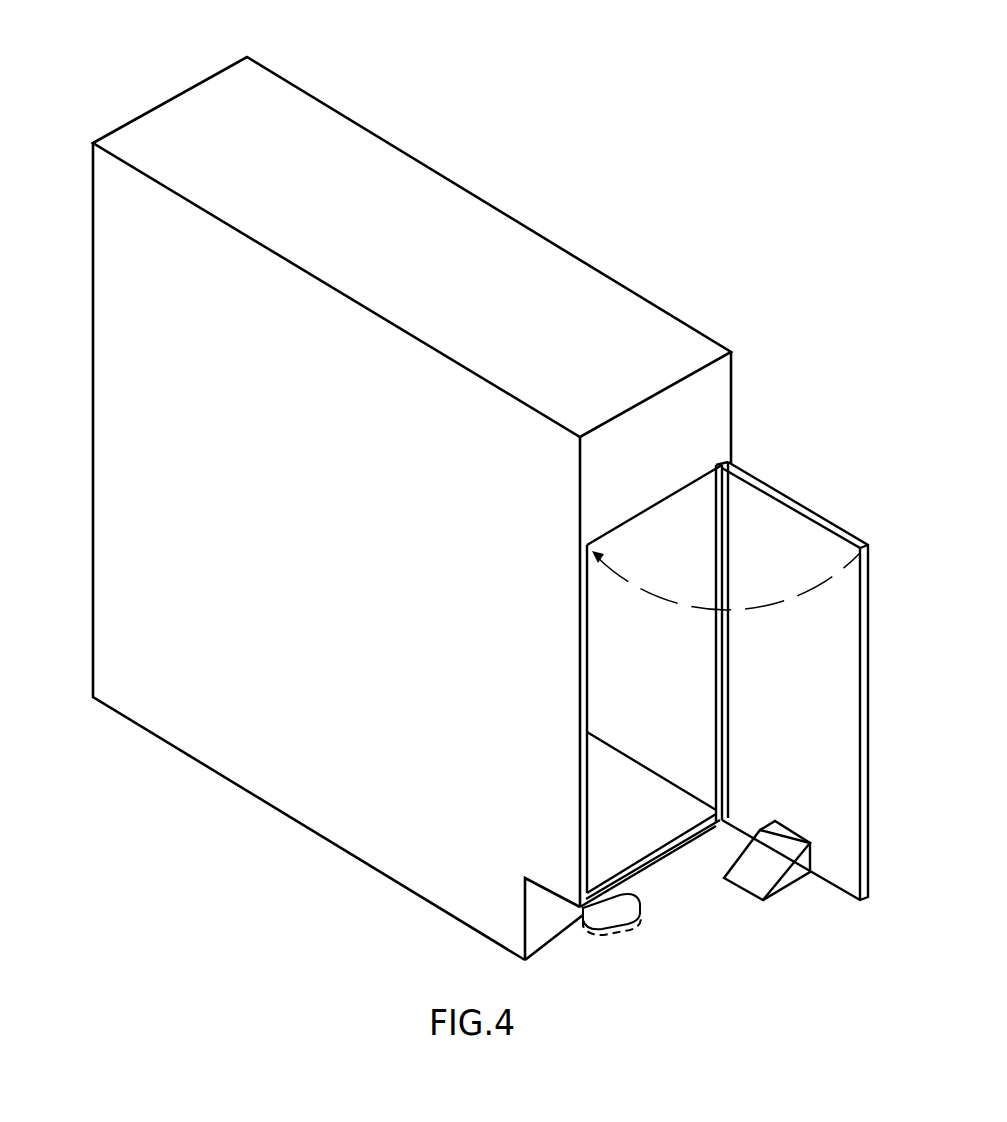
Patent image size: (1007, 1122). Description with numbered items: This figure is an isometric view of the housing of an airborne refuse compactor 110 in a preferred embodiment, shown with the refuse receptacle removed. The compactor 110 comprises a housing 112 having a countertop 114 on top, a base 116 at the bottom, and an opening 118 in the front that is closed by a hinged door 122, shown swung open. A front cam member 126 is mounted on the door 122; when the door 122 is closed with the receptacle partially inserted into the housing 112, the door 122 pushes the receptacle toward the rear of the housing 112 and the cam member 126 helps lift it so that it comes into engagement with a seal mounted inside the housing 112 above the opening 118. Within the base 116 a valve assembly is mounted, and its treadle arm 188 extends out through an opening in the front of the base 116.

The airborne refuse compactor 110 is at (534, 184).
The housing 112 is at (92, 640).
The countertop 114 is at (358, 124).
The base 116 is at (523, 918).
The opening 118 is at (585, 812).
The hinged door 122 is at (868, 560).
The front cam member 126 is at (765, 900).
The treadle arm 188 is at (611, 930).